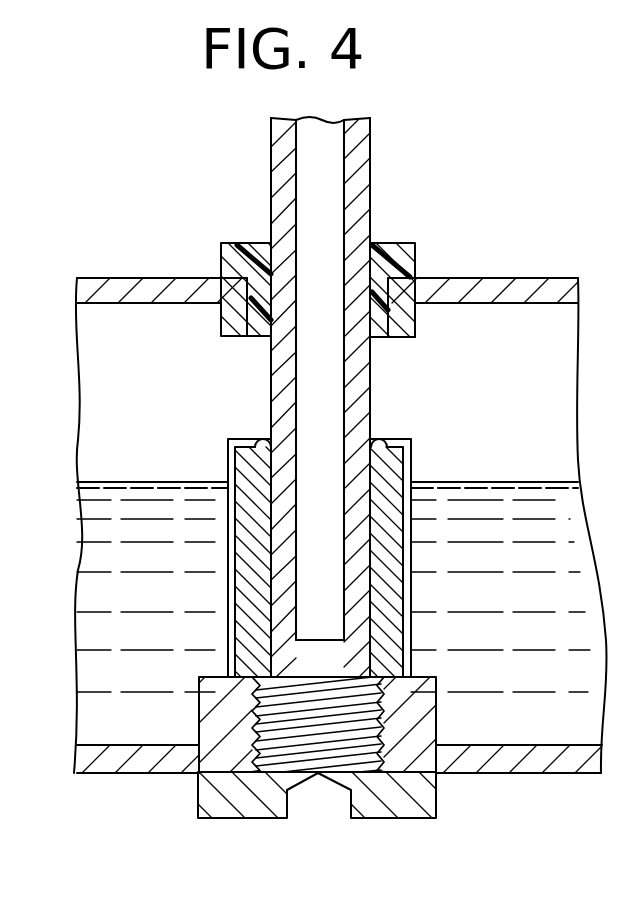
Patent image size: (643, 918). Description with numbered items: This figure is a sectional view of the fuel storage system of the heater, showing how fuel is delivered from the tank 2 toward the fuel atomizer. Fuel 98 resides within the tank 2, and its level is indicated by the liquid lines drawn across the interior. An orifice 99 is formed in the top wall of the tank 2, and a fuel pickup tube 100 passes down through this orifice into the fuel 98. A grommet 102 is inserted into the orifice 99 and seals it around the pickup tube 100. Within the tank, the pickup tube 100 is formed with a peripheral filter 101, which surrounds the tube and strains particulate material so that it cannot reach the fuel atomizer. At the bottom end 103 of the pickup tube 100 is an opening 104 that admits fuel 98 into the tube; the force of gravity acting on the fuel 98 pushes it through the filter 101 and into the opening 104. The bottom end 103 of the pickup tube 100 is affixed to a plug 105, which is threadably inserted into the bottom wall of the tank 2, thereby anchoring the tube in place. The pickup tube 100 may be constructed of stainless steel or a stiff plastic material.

The tank 2 is at (184, 290).
The fuel 98 is at (527, 508).
The orifice 99 is at (374, 340).
The fuel pickup tube 100 is at (371, 181).
The peripheral filter 101 is at (386, 510).
The grommet 102 is at (398, 255).
The bottom end 103 is at (354, 662).
The opening 104 is at (318, 656).
The plug 105 is at (265, 800).